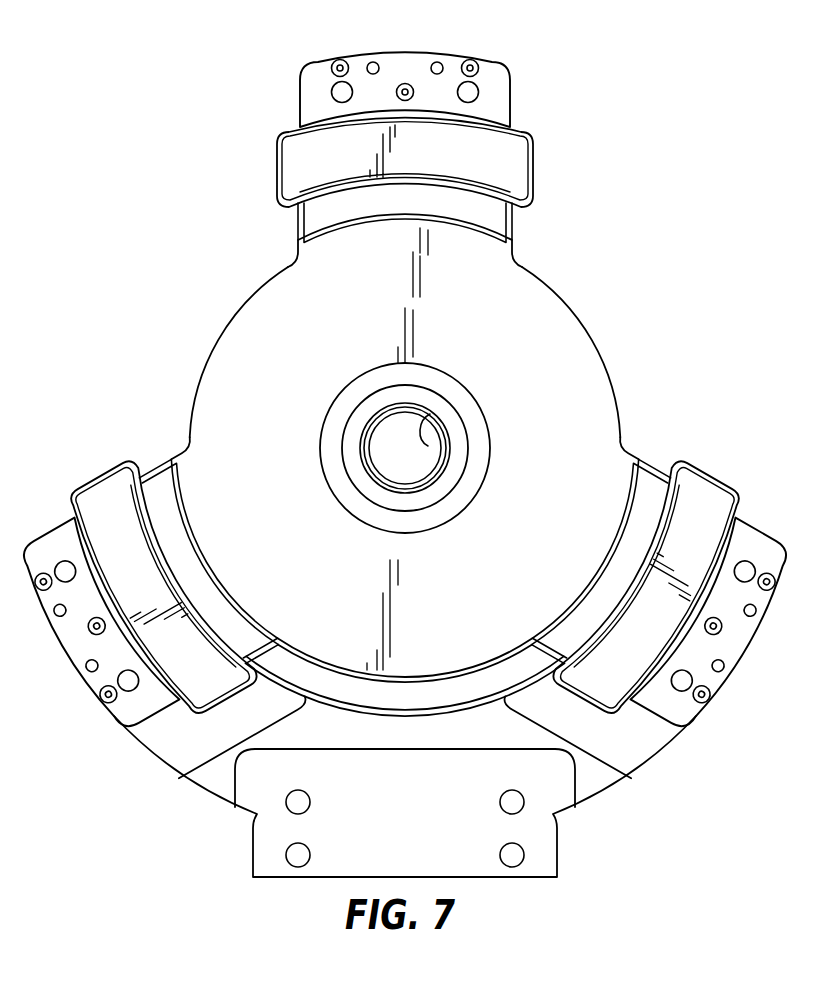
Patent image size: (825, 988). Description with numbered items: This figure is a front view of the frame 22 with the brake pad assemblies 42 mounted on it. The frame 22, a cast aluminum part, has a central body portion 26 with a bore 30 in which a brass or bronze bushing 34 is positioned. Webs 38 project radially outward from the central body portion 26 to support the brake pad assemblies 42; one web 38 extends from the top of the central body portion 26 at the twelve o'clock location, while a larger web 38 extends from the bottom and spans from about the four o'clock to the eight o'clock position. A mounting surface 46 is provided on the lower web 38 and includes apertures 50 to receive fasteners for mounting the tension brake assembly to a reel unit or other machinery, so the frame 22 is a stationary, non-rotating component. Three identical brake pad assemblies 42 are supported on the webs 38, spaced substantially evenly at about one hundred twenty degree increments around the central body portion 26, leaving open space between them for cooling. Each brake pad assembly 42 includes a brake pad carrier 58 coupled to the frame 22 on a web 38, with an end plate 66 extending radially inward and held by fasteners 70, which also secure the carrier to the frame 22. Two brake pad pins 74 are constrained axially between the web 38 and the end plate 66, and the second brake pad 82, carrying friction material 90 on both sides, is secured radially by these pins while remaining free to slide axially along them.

The frame 22 is at (595, 803).
The central body portion 26 is at (537, 280).
The bore 30 is at (427, 446).
The bushing 34 is at (366, 440).
The web 38 is at (512, 220).
The brake pad assembly 42 is at (413, 398).
The mounting surface 46 is at (522, 830).
The apertures 50 is at (287, 858).
The brake pad carrier 58 is at (788, 560).
The end plate 66 is at (513, 68).
The fasteners 70 is at (339, 60).
The brake pad pins 74 is at (464, 84).
The second brake pad 82 is at (276, 148).
The friction material 90 is at (290, 178).